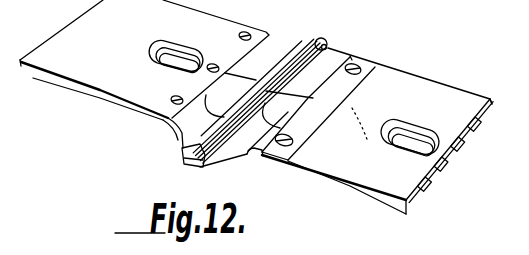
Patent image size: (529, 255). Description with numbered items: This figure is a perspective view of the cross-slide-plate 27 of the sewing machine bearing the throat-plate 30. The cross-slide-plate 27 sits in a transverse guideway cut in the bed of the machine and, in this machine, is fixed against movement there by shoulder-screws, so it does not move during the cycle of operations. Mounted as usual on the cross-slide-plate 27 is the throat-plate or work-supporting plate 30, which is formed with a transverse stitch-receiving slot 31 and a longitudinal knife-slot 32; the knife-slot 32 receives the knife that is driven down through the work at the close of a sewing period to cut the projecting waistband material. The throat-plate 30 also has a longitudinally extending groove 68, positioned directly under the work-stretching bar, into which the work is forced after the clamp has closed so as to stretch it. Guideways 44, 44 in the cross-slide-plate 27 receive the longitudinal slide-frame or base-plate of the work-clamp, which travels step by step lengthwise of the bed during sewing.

The cross-slide-plate 27 is at (422, 83).
The throat-plate 30 is at (248, 100).
The transverse stitch-receiving slot 31 is at (258, 90).
The longitudinal knife-slot 32 is at (294, 56).
The guideways 44 is at (168, 128).
The longitudinally extending groove 68 is at (182, 151).